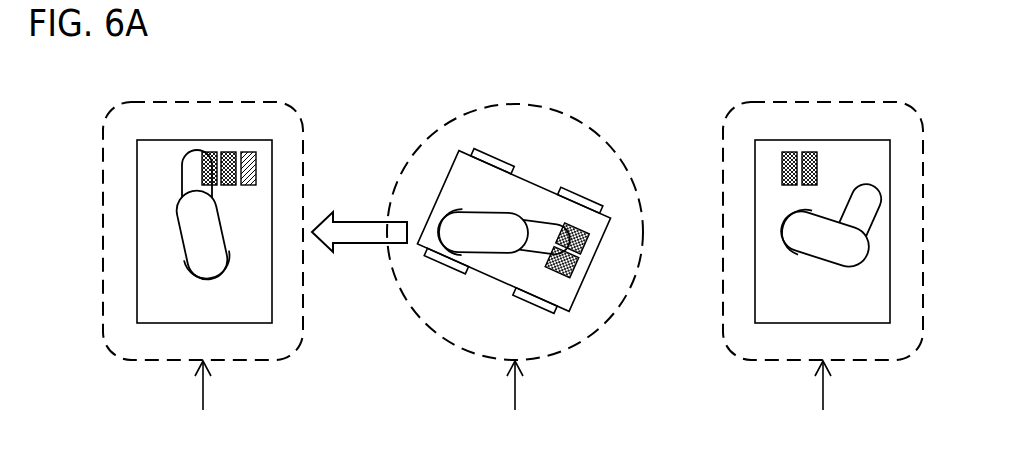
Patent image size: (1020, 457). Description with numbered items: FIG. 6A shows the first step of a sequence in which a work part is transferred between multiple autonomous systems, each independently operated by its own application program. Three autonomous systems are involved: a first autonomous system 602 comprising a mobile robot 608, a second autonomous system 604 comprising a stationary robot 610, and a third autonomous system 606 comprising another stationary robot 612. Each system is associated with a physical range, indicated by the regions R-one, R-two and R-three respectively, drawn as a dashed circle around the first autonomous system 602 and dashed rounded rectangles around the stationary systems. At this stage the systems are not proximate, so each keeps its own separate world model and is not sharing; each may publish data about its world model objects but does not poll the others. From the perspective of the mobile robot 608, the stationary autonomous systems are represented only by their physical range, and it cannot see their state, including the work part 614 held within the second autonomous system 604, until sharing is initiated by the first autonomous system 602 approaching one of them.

The first autonomous system 602 is at (515, 246).
The second autonomous system 604 is at (242, 243).
The third autonomous system 606 is at (823, 243).
The mobile robot 608 is at (493, 233).
The stationary robot 610 is at (210, 258).
The stationary robot 612 is at (840, 245).
The work part 614 is at (256, 167).